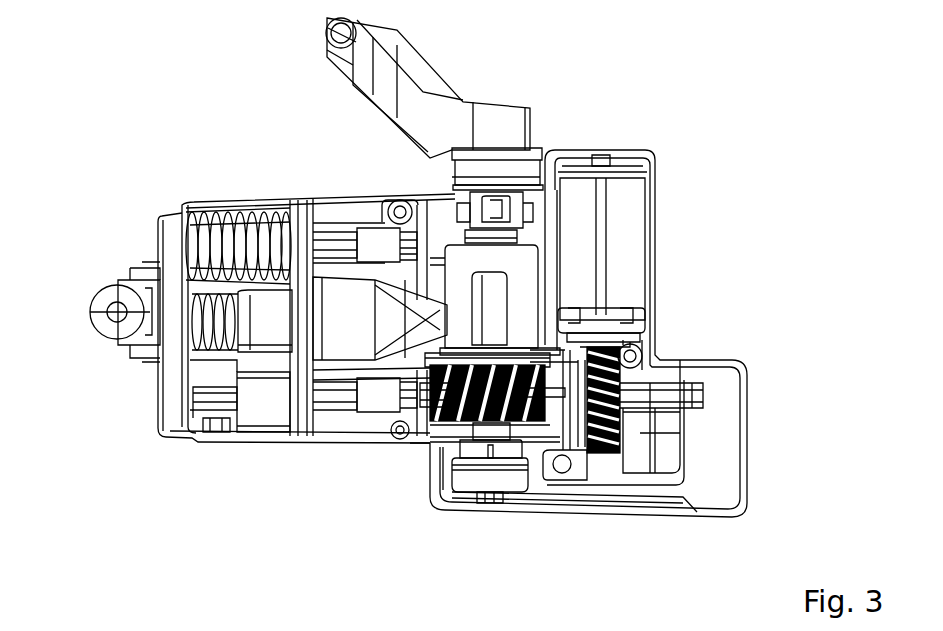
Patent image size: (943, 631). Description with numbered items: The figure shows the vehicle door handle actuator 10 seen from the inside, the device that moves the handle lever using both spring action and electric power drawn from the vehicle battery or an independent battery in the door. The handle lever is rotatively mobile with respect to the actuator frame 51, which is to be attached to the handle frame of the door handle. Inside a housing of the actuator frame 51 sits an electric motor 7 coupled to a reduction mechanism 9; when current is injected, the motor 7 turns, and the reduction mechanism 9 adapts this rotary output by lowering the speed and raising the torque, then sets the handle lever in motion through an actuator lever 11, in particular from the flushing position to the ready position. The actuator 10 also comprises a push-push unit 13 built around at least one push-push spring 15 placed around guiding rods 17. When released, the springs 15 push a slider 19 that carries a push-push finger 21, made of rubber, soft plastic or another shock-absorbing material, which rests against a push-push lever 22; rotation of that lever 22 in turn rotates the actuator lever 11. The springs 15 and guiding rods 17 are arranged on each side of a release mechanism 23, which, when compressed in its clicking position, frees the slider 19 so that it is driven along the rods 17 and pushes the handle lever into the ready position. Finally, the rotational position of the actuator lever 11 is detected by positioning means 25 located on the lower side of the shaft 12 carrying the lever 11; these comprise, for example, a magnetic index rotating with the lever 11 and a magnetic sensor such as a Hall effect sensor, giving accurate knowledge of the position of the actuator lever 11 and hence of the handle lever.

The door handle actuator 10 is at (705, 92).
The actuator lever 11 is at (325, 55).
The shaft 12 is at (440, 170).
The push-push unit 13 is at (420, 184).
The push-push spring 15 is at (180, 236).
The guiding rods 17 is at (212, 448).
The slider 19 is at (305, 450).
The push-push finger 21 is at (385, 450).
The push-push lever 22 is at (525, 297).
The release mechanism 23 is at (185, 340).
The positioning means 25 is at (500, 505).
The electric motor 7 is at (660, 314).
The reduction mechanism 9 is at (660, 430).
The actuator frame 51 is at (726, 517).